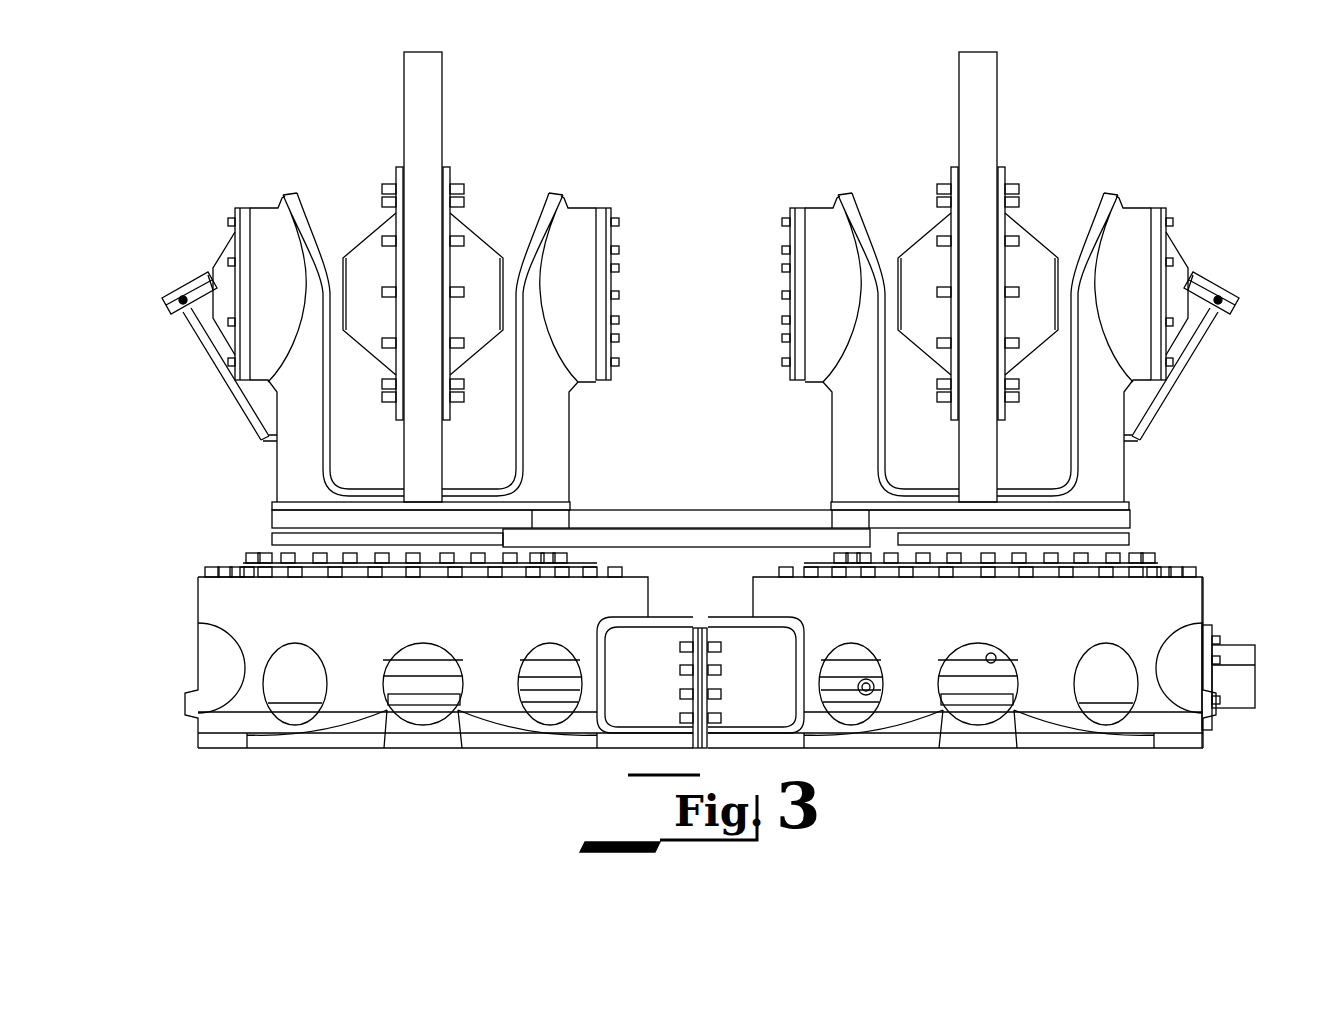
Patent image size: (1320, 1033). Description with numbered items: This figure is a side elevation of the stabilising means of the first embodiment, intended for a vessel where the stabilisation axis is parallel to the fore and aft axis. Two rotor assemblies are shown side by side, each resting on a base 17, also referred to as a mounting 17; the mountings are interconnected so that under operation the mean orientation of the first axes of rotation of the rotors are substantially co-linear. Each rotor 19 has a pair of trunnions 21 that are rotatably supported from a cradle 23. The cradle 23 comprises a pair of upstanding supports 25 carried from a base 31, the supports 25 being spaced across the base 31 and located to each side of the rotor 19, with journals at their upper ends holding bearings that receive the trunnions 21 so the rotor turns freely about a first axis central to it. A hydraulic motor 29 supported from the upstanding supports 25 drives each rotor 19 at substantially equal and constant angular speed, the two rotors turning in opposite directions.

The base 17 is at (197, 597).
The rotor 19 is at (428, 104).
The trunnions 21 is at (896, 255).
The cradle 23 is at (1160, 498).
The upstanding supports 25 is at (1105, 455).
The hydraulic motor 29 is at (180, 292).
The base 31 is at (1130, 520).